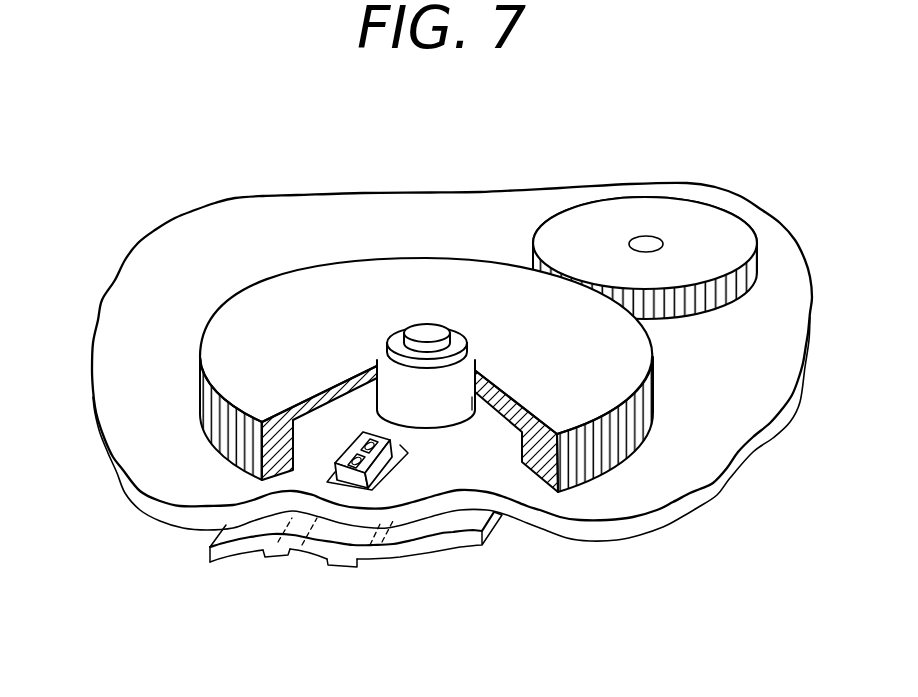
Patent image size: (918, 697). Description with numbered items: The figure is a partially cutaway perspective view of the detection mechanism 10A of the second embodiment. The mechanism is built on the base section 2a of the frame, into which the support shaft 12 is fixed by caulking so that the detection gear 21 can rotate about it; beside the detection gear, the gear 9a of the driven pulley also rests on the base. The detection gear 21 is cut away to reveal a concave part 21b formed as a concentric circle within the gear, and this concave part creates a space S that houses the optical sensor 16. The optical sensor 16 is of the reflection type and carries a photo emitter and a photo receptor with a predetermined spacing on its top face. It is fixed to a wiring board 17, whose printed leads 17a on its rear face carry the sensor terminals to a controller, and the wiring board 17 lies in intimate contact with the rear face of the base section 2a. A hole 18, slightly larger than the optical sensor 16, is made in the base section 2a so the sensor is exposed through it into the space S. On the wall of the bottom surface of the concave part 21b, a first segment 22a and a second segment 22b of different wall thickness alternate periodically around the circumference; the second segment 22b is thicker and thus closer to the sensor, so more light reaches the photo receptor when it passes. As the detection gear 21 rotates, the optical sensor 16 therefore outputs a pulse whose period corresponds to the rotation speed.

The detection mechanism 10A is at (146, 149).
The base section 2a is at (387, 205).
The detection gear 21 is at (444, 284).
The support shaft 12 is at (435, 336).
The gear 9a is at (682, 232).
The concave part 21b is at (352, 413).
The first segment 22a is at (324, 428).
The second segment 22b is at (493, 432).
The space S is at (312, 437).
The optical sensor 16 is at (391, 492).
The hole 18 is at (410, 462).
The wiring board 17 is at (207, 553).
The leads 17a is at (262, 562).